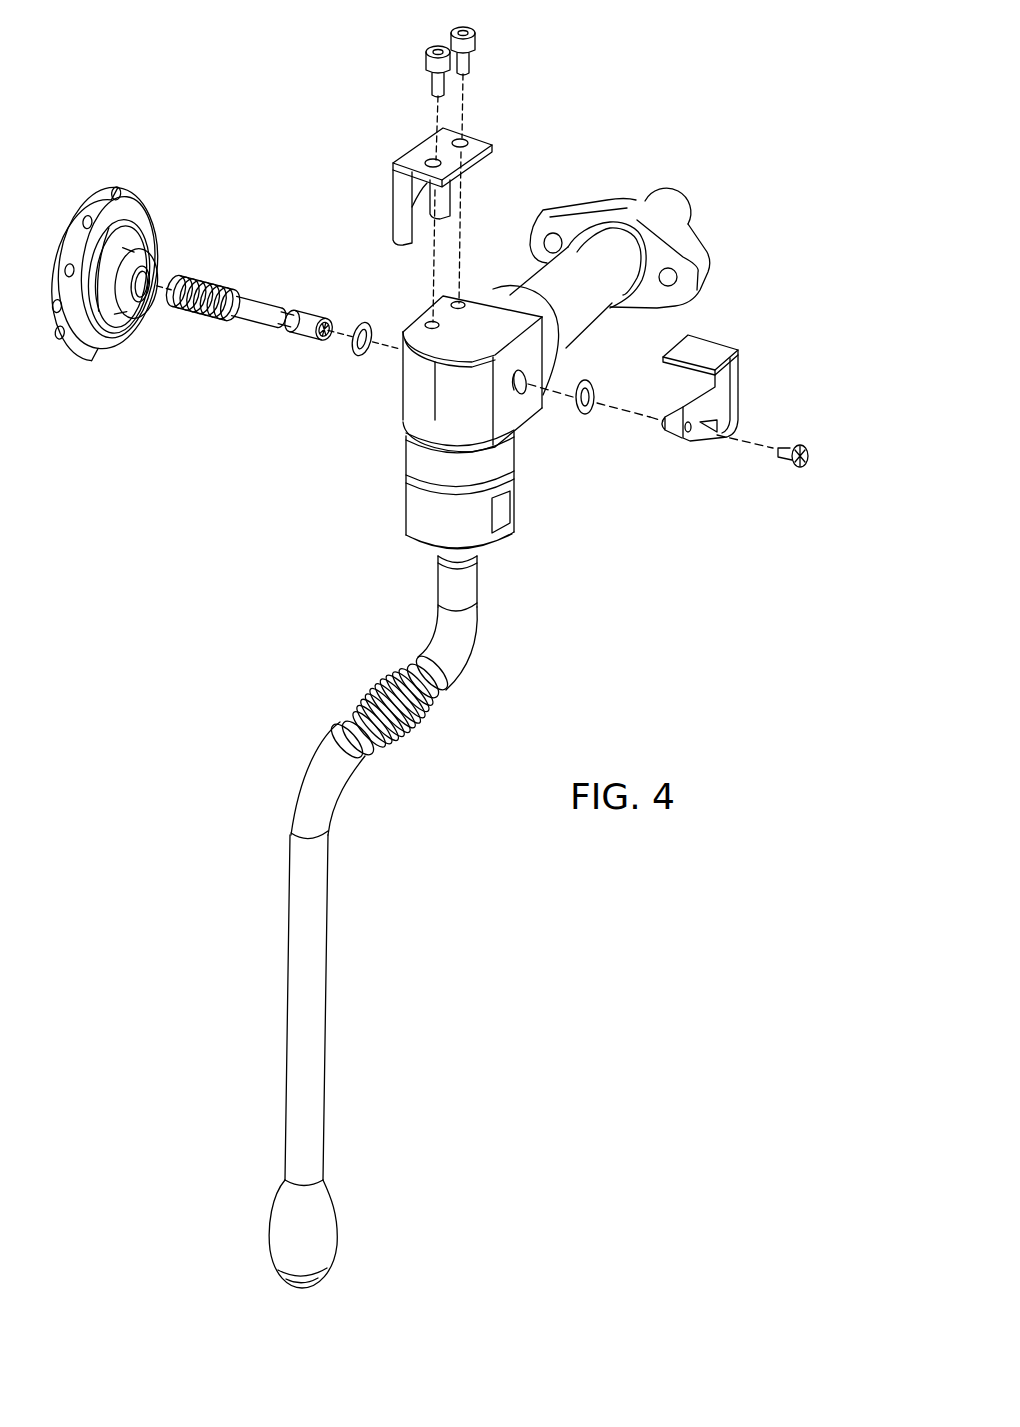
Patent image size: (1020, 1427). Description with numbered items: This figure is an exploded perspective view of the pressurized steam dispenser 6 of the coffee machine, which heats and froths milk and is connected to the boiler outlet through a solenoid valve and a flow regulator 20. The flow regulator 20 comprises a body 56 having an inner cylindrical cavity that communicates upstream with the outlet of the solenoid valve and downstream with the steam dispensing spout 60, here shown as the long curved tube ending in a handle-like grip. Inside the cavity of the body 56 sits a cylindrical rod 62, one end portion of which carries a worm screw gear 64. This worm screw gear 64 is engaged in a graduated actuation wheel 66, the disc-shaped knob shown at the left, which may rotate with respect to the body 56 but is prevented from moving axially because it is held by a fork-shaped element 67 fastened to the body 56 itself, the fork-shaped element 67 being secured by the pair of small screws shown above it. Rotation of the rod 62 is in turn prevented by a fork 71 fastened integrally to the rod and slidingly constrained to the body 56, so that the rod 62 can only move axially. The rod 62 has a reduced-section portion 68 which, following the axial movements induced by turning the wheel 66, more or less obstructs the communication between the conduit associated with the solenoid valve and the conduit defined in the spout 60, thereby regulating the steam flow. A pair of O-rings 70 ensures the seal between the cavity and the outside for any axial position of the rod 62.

The dispenser of pressurized steam 6 is at (563, 173).
The flow regulator 20 is at (370, 458).
The body 56 is at (500, 418).
The steam dispensing spout 60 is at (312, 1010).
The cylindrical rod 62 is at (257, 305).
The worm screw gear 64 is at (208, 277).
The graduated actuation wheel 66 is at (117, 187).
The fork-shaped element 67 is at (480, 138).
The reduced-section portion 68 is at (287, 327).
The O-rings 70 is at (353, 358).
The fork 71 is at (702, 350).